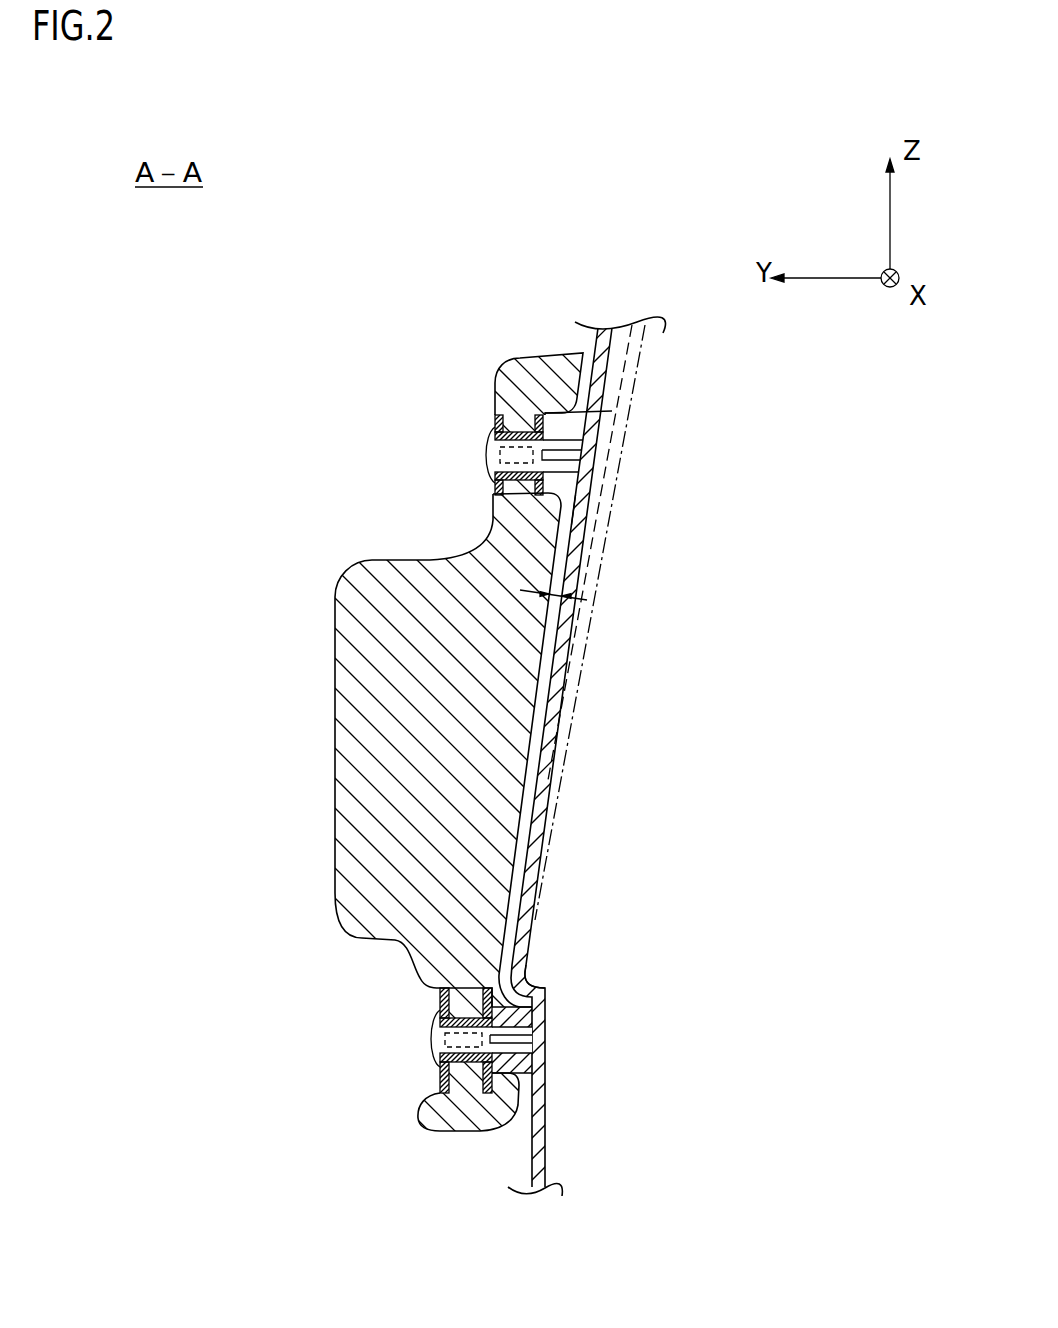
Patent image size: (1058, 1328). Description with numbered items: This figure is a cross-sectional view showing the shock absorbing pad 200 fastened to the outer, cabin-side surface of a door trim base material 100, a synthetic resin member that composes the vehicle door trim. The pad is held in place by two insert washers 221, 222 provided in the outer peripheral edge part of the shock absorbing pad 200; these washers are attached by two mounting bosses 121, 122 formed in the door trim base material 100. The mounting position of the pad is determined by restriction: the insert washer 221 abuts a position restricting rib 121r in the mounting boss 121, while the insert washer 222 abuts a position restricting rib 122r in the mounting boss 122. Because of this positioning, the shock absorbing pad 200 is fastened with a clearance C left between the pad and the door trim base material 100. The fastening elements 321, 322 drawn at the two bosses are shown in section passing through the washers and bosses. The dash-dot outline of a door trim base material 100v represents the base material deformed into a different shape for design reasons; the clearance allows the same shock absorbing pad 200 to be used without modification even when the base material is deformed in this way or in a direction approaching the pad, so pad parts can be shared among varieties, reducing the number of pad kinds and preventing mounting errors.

The door trim base material 100 is at (583, 654).
The door trim base material 100v is at (627, 461).
The mounting boss 121 is at (582, 508).
The position restricting rib 121r is at (592, 518).
The mounting boss 122 is at (513, 1055).
The position restricting rib 122r is at (536, 990).
The shock absorbing pad 200 is at (333, 710).
The insert washer 221 is at (488, 512).
The insert washer 222 is at (417, 1100).
The first fastener (rivet) 321 is at (484, 458).
The second fastener (rivet) 322 is at (432, 1040).
The clearance C is at (556, 597).